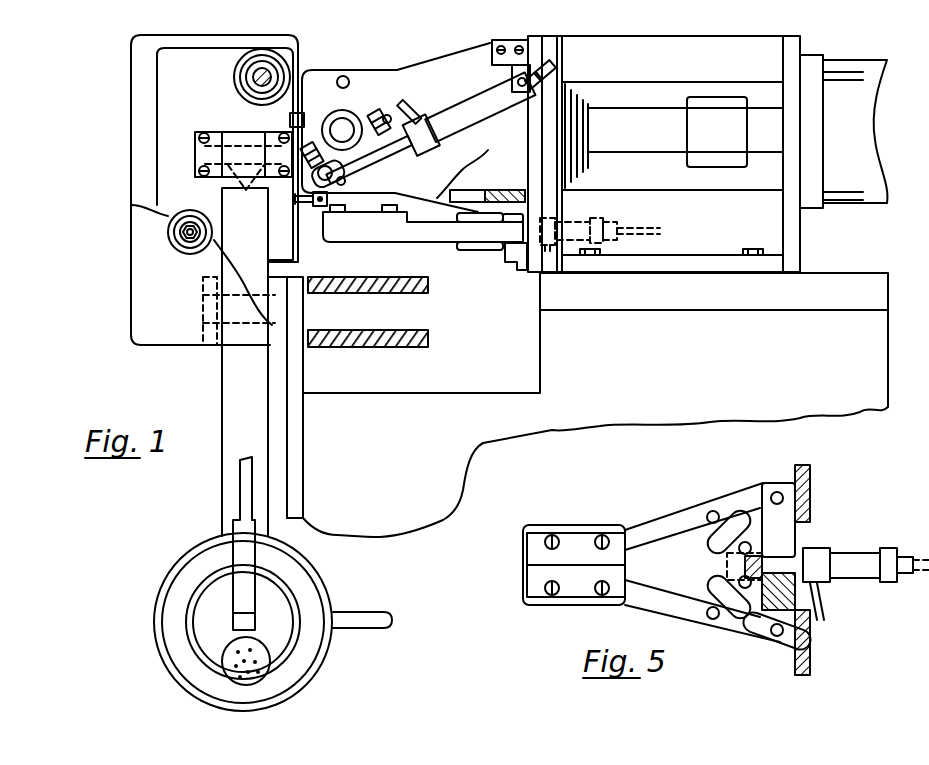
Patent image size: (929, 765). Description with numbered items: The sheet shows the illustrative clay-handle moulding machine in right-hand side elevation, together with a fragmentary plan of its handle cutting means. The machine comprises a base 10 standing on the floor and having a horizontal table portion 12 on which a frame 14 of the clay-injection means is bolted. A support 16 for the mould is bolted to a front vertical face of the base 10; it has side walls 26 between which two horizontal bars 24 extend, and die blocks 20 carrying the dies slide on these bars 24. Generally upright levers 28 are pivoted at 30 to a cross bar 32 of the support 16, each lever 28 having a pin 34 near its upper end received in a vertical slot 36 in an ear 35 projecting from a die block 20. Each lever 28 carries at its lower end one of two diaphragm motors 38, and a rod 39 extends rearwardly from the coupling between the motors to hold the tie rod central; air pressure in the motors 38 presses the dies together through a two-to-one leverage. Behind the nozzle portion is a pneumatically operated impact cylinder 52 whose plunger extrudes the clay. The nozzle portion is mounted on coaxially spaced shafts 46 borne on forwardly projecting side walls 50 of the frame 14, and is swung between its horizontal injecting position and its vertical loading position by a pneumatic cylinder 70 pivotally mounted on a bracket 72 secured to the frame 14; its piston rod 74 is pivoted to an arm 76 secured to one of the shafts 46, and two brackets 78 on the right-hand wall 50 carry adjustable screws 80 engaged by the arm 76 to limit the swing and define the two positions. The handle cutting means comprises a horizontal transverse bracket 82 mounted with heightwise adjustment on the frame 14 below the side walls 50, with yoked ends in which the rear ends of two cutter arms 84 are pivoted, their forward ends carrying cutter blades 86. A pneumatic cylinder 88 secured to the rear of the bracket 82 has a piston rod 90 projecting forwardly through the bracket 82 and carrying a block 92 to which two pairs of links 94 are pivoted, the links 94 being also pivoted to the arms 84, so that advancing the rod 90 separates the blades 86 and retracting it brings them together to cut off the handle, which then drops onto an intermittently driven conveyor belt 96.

In FIG. 1, the base 10 is at (685, 369).
In FIG. 1, the horizontal table portion 12 is at (828, 282).
In FIG. 1, the frame 14 is at (782, 218).
In FIG. 5, the frame 14 is at (810, 481).
In FIG. 1, the support 16 is at (104, 246).
In FIG. 1, the die blocks 20 is at (160, 85).
In FIG. 1, the horizontal bars 24 is at (257, 66).
In FIG. 1, the side walls 26 is at (137, 298).
In FIG. 1, the levers 28 is at (255, 446).
In FIG. 1, the pivot 30 is at (208, 343).
In FIG. 1, the cross bar 32 is at (295, 288).
In FIG. 1, the pin 34 is at (246, 140).
In FIG. 1, the ear 35 is at (219, 132).
In FIG. 1, the vertical slot 36 is at (246, 190).
In FIG. 1, the diaphragm motors 38 is at (180, 578).
In FIG. 1, the rod 39 is at (366, 615).
In FIG. 1, the shafts 46 is at (343, 126).
In FIG. 1, the side walls 50 is at (424, 70).
In FIG. 1, the impact cylinder 52 is at (860, 144).
In FIG. 1, the pneumatic cylinder 70 is at (462, 124).
In FIG. 1, the bracket 72 is at (505, 40).
In FIG. 1, the piston rod 74 is at (376, 158).
In FIG. 1, the arm 76 is at (349, 170).
In FIG. 1, the brackets 78 is at (314, 140).
In FIG. 1, the adjustable screw 80 is at (296, 122).
In FIG. 1, the bracket 82 is at (518, 272).
In FIG. 5, the bracket 82 is at (790, 535).
In FIG. 1, the cutter arms 84 is at (358, 232).
In FIG. 5, the cutter arms 84 is at (660, 525).
In FIG. 5, the cutter blades 86 is at (536, 567).
In FIG. 1, the pneumatic cylinder 88 is at (590, 222).
In FIG. 5, the pneumatic cylinder 88 is at (867, 553).
In FIG. 5, the piston rod 90 is at (795, 588).
In FIG. 5, the block 92 is at (728, 562).
In FIG. 1, the links 94 is at (482, 222).
In FIG. 5, the links 94 is at (708, 512).
In FIG. 1, the conveyor belt 96 is at (402, 300).